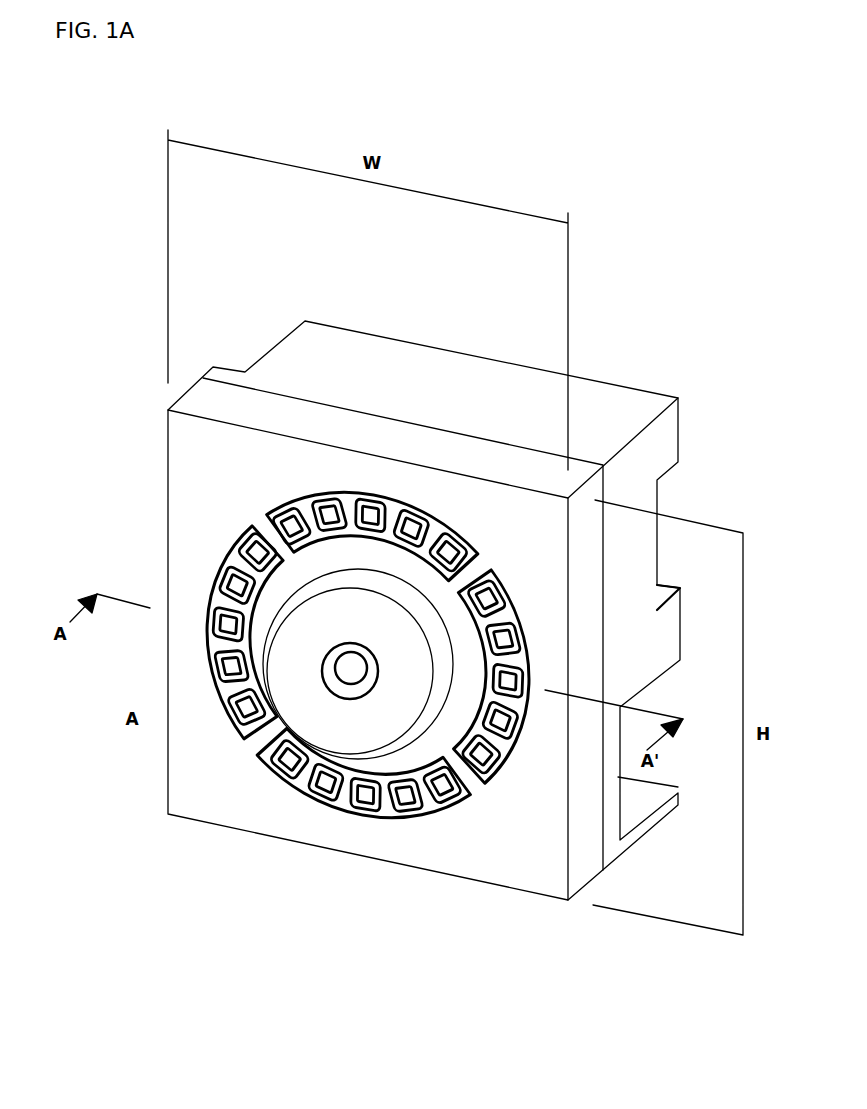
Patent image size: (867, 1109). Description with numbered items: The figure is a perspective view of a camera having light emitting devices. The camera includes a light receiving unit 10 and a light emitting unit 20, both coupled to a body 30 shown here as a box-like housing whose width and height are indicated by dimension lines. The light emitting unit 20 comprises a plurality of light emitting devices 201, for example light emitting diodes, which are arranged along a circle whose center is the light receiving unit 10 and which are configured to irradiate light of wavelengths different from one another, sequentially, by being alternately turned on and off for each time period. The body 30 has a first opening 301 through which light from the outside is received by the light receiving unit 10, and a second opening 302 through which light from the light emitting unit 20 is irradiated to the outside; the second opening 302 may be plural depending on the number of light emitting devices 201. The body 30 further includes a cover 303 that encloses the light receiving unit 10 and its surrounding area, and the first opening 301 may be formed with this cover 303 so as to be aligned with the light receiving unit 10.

The light receiving unit 10 is at (358, 672).
The light emitting unit 20 is at (420, 259).
The light emitting devices 201 is at (288, 517).
The body 30 is at (192, 477).
The first opening 301 is at (332, 688).
The second opening 302 is at (198, 676).
The cover 303 is at (325, 575).